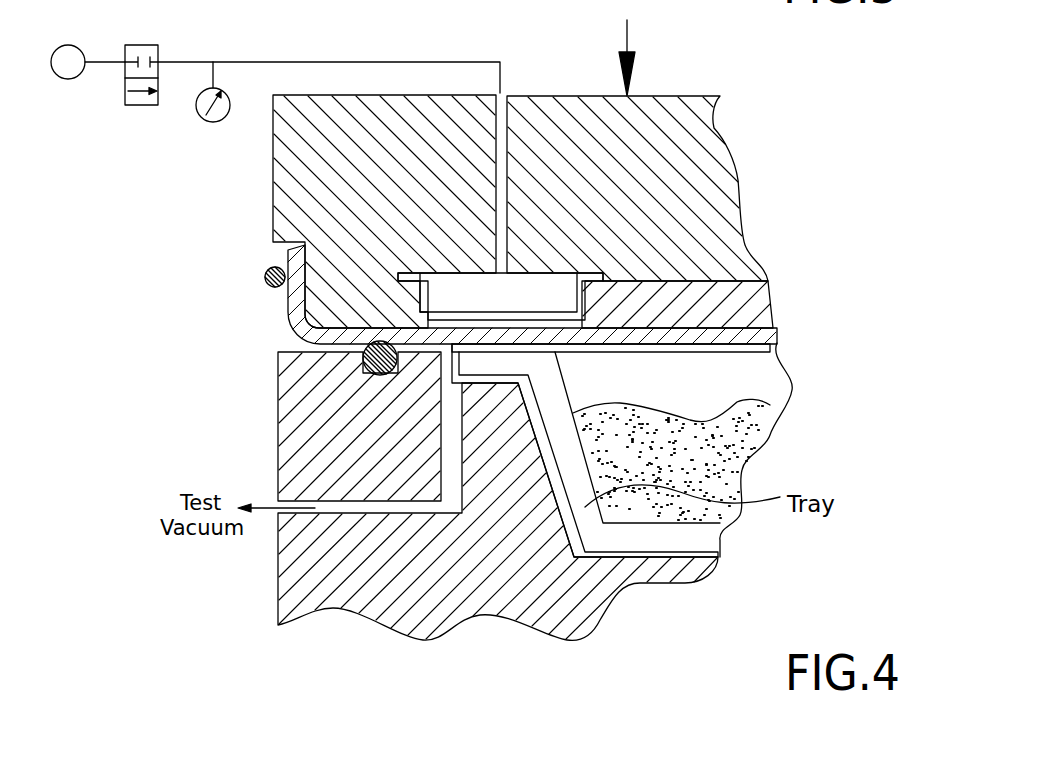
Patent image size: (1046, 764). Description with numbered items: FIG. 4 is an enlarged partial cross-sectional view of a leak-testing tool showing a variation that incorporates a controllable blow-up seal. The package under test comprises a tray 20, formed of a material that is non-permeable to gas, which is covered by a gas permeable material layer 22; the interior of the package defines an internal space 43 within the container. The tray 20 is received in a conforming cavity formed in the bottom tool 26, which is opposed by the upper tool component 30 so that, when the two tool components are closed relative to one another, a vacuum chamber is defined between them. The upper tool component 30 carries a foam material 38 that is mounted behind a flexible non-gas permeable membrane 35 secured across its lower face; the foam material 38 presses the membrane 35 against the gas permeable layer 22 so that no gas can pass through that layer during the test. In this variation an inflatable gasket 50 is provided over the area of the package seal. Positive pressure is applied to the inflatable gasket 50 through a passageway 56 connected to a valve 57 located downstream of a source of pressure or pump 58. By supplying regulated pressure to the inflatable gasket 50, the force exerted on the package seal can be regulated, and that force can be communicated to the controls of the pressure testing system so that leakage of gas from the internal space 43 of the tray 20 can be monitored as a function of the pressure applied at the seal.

The valve 57 is at (160, 47).
The pump 58 is at (70, 80).
The upper tool component 30 is at (308, 177).
The passageway 56 is at (505, 122).
The inflatable gasket 50 is at (508, 323).
The foam material 38 is at (752, 297).
The flexible non-gas permeable membrane 35 is at (773, 337).
The gas permeable material layer 22 is at (772, 360).
The internal space 43 is at (719, 397).
The tray 20 is at (712, 541).
The bottom tool 26 is at (638, 567).